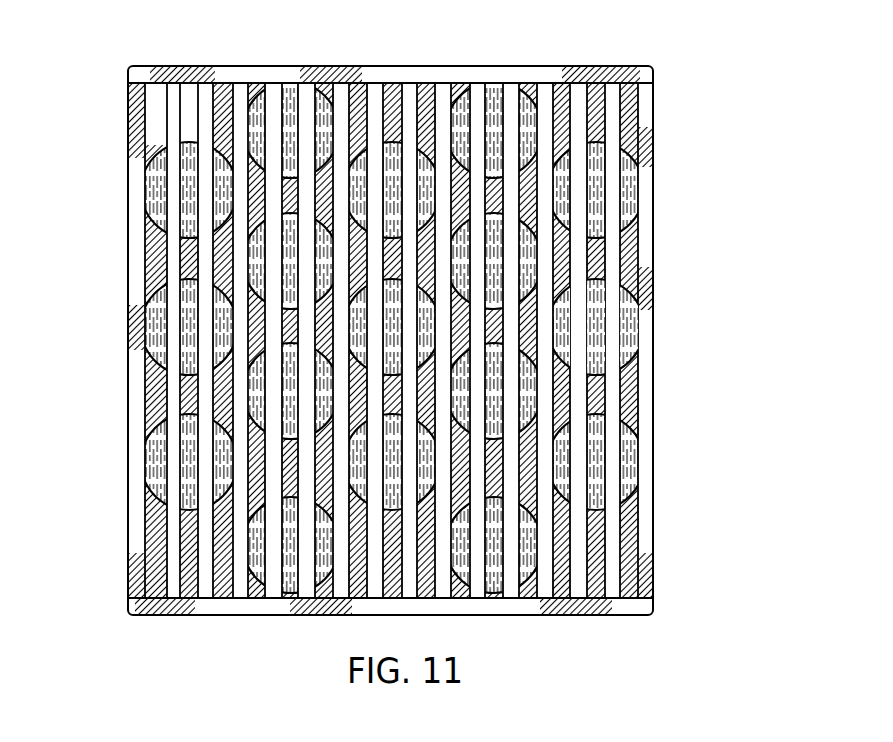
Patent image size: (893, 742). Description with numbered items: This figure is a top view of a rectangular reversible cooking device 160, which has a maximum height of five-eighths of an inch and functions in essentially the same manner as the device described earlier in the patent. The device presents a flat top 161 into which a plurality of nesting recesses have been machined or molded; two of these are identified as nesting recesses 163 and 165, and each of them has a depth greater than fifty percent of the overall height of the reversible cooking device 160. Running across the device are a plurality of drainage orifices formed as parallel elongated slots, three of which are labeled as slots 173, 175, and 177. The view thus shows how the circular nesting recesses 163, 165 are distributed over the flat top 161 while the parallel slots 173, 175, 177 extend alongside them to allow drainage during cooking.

The reversible cooking device 160 is at (673, 123).
The flat top 161 is at (653, 372).
The nesting recess 163 is at (628, 309).
The nesting recess 165 is at (540, 482).
The slot 173 is at (205, 200).
The slot 175 is at (237, 307).
The slot 177 is at (273, 410).